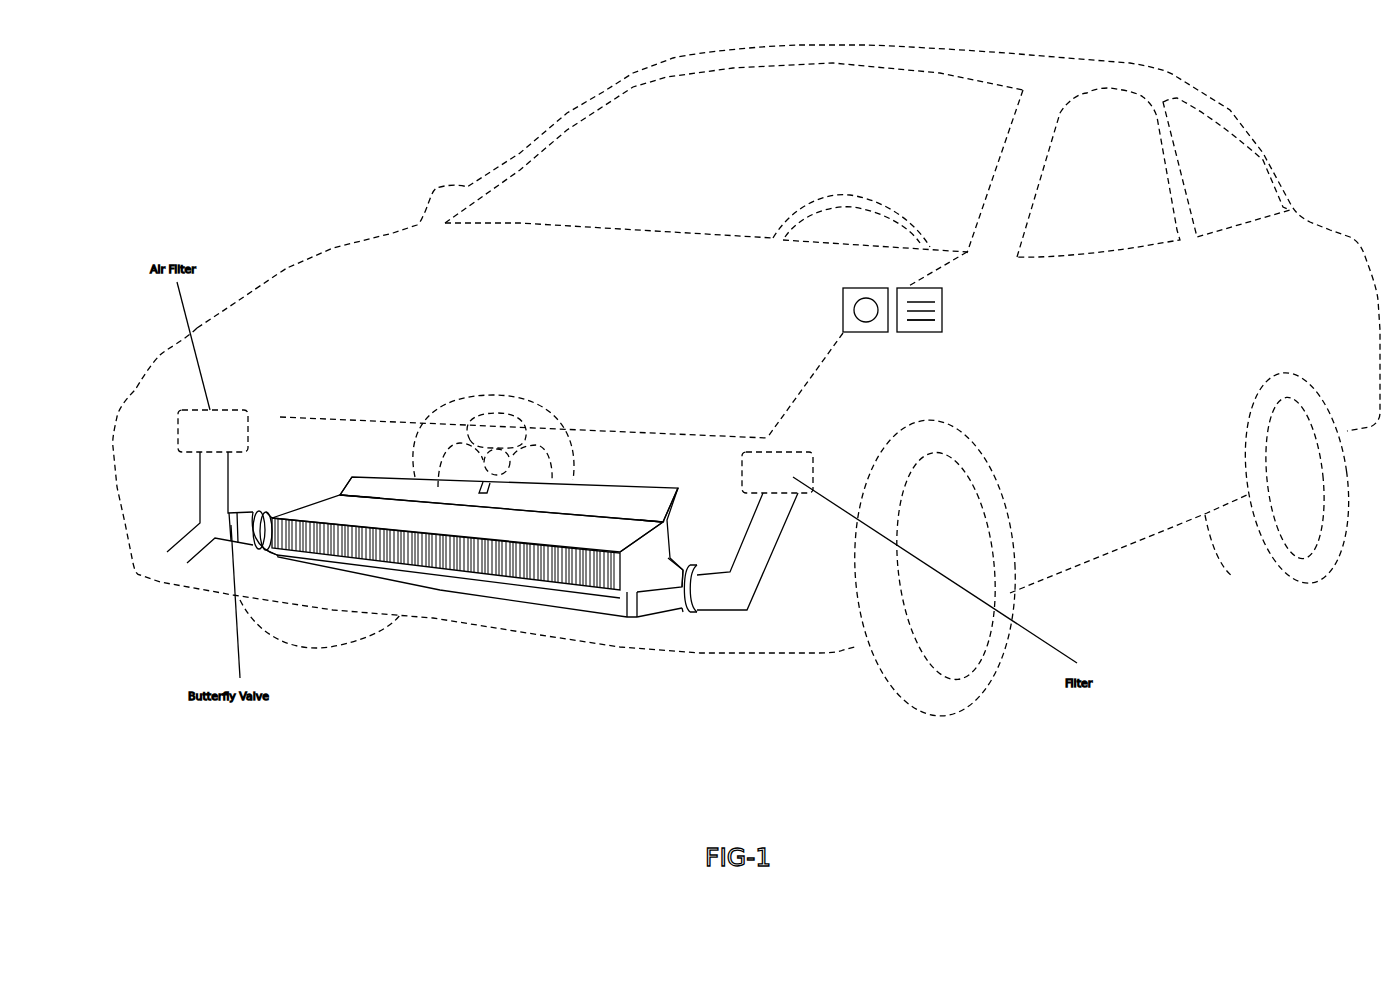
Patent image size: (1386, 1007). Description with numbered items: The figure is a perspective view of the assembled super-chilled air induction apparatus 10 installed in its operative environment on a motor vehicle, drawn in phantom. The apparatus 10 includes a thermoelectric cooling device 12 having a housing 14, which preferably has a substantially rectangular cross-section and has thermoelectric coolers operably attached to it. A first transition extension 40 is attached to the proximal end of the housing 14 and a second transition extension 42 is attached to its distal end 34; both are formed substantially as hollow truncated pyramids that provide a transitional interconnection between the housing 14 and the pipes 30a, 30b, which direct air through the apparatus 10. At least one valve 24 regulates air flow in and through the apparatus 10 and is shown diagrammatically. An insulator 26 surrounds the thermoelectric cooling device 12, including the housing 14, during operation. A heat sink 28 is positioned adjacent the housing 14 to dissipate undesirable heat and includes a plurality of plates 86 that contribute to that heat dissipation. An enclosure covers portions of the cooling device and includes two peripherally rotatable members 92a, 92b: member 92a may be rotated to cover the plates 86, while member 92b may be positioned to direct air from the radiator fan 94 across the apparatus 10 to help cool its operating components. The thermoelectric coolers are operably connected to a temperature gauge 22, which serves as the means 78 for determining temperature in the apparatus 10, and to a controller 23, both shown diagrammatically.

The super-chilled air induction apparatus 10 is at (343, 740).
The thermoelectric cooling device 12 is at (623, 470).
The housing 14 is at (653, 603).
The temperature gauge 22 is at (942, 310).
The controller 23 is at (843, 300).
The valve 24 is at (213, 468).
The insulator 26 is at (543, 590).
The heat sink 28 is at (330, 512).
The pipe 30a is at (180, 553).
The pipe 30b is at (743, 580).
The distal end 34 is at (697, 565).
The first transition extension 40 is at (265, 517).
The second transition extension 42 is at (689, 610).
The means for determining temperature 78 is at (915, 332).
The plurality of plates 86 is at (478, 558).
The peripherally rotatable member 92a is at (388, 513).
The peripherally rotatable member 92b is at (650, 503).
The radiator fan 94 is at (498, 423).